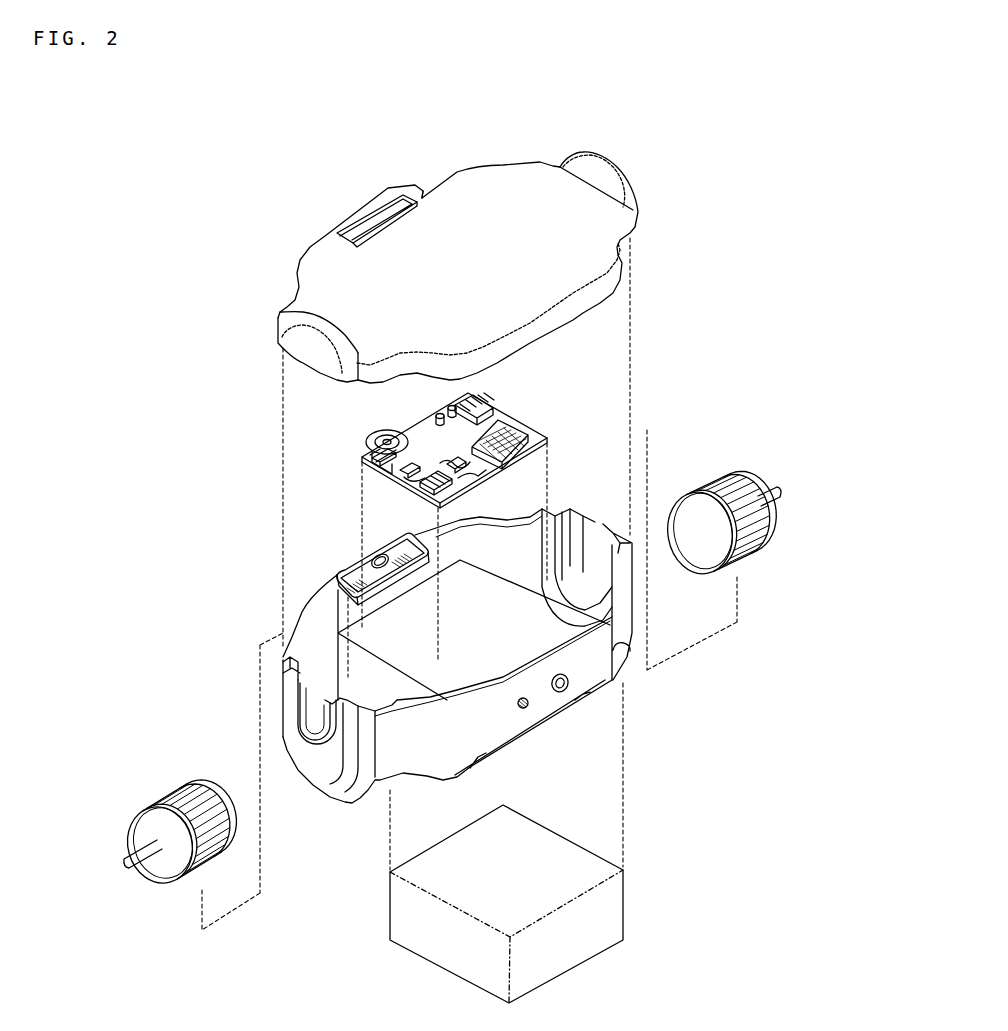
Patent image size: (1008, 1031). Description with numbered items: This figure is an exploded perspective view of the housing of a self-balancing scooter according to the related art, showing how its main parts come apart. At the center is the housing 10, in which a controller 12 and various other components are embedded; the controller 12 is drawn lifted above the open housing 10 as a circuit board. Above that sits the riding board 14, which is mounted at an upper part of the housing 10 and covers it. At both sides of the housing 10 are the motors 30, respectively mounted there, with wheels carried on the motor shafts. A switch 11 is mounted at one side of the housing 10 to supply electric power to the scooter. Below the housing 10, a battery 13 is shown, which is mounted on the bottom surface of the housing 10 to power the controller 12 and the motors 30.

The housing 10 is at (343, 797).
The switch 11 is at (562, 692).
The controller 12 is at (503, 420).
The battery 13 is at (617, 907).
The riding board 14 is at (475, 183).
The motors 30 is at (778, 535).